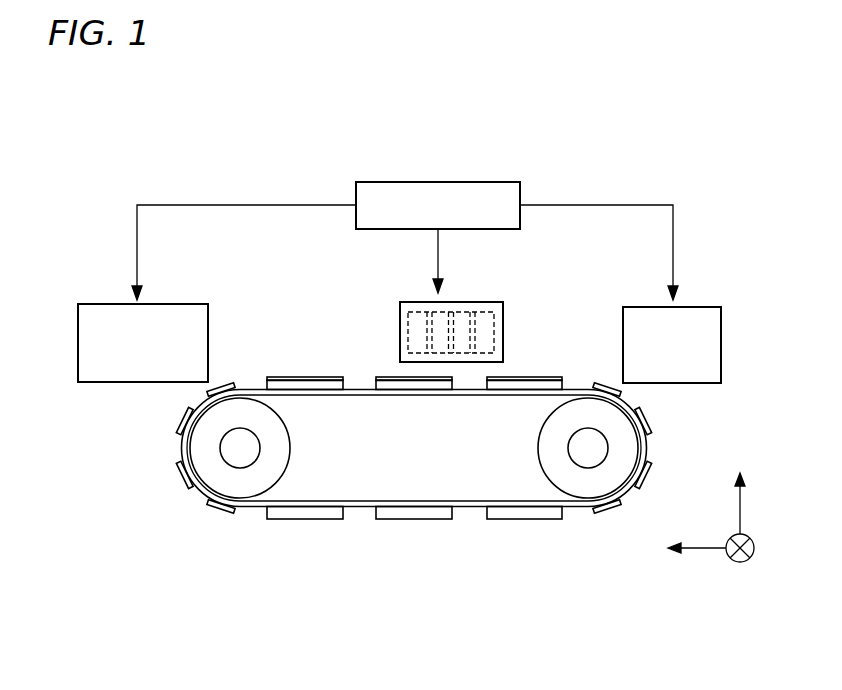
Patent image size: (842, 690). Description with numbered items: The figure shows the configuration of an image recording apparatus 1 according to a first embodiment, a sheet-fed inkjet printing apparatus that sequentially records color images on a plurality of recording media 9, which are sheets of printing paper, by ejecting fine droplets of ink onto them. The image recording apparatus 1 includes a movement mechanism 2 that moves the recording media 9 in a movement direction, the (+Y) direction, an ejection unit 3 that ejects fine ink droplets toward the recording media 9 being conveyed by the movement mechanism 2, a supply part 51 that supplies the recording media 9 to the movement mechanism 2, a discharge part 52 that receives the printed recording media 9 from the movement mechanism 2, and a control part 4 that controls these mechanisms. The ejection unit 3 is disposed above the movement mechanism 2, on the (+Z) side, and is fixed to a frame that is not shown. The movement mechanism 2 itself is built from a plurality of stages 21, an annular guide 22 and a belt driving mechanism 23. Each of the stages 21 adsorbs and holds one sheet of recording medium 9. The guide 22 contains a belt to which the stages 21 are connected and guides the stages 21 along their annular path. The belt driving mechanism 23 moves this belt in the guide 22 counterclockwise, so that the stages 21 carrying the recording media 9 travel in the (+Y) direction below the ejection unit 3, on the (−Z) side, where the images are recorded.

The image recording apparatus 1 is at (155, 137).
The movement mechanism 2 is at (413, 461).
The ejection unit 3 is at (488, 302).
The control part 4 is at (484, 182).
The recording medium 9 is at (306, 376).
The stage 21 is at (270, 378).
The guide 22 is at (472, 507).
The belt driving mechanism 23 is at (246, 480).
The supply part 51 is at (700, 307).
The discharge part 52 is at (108, 304).